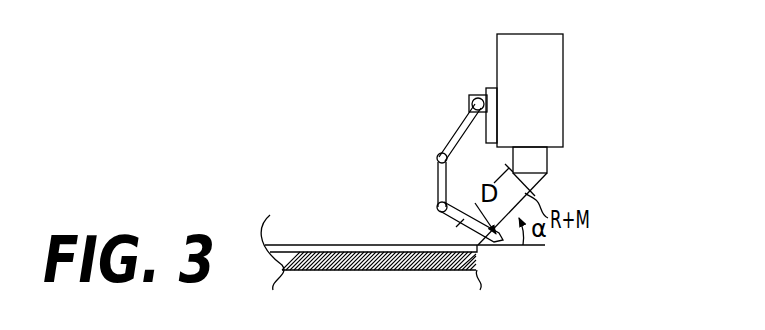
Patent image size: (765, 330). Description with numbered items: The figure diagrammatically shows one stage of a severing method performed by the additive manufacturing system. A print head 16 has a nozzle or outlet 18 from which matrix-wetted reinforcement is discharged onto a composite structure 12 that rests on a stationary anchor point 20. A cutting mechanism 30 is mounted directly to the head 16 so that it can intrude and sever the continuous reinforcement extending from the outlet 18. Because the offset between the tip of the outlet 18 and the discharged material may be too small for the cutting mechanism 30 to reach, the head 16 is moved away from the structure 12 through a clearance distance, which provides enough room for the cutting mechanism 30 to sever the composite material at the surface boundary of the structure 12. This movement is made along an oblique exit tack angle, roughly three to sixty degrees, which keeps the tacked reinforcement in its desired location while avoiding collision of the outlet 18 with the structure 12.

The composite structure 12 is at (300, 244).
The print head 16 is at (588, 105).
The outlet 18 is at (546, 163).
The anchor point 20 is at (473, 272).
The cutting mechanism 30 is at (431, 147).